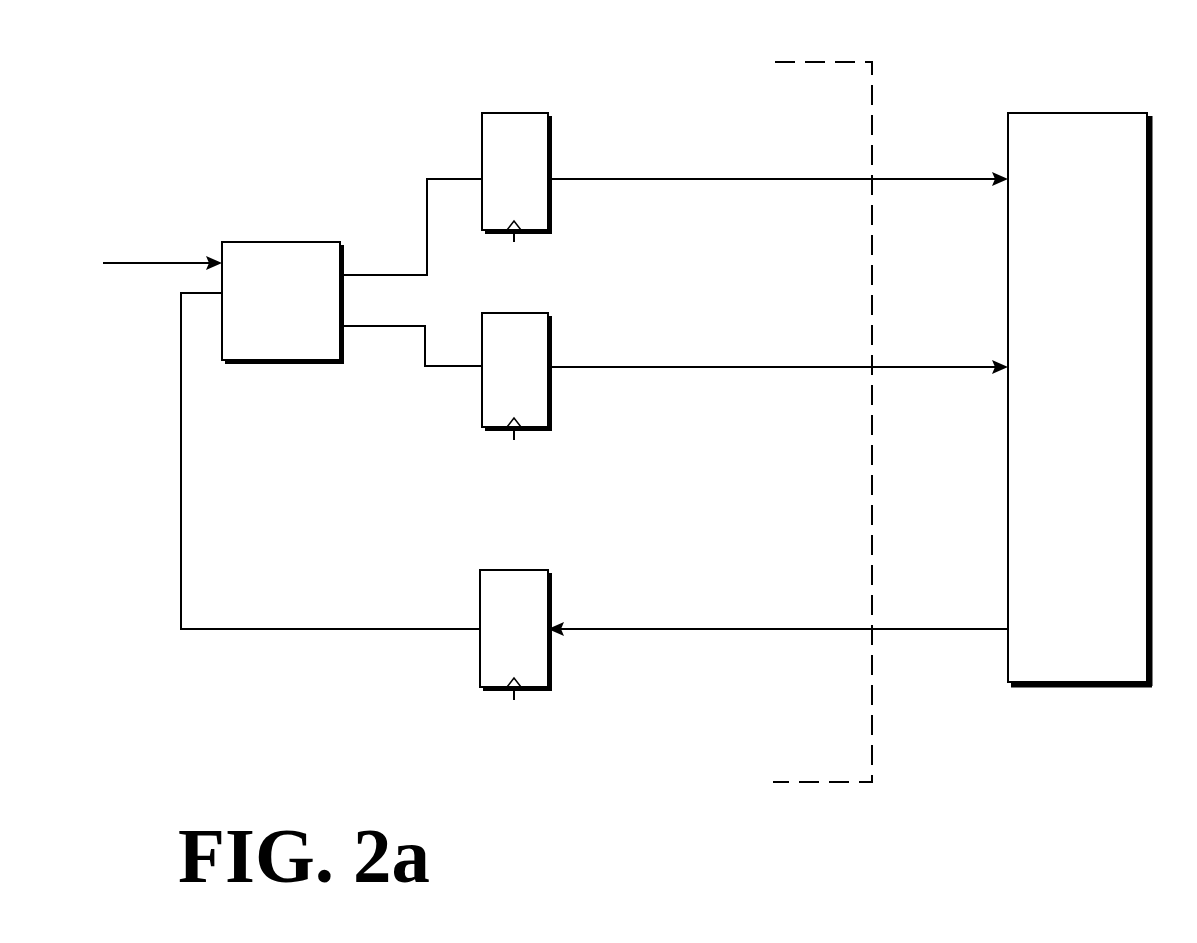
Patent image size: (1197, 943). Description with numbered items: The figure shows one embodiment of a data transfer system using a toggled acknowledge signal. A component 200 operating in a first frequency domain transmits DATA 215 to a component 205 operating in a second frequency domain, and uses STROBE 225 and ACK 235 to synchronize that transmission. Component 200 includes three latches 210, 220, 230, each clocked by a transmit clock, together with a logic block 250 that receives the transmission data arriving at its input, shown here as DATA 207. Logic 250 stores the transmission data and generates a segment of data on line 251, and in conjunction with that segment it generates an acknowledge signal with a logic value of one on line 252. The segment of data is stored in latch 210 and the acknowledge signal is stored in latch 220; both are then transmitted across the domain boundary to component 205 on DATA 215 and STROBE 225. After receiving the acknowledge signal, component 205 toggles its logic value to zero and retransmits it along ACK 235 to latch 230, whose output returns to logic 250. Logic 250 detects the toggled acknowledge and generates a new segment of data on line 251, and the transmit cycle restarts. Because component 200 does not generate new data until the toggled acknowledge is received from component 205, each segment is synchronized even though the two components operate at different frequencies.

The component 200 is at (250, 74).
The component 205 is at (1105, 113).
The data input 207 is at (148, 249).
The latch 210 is at (492, 113).
The DATA 215 is at (778, 168).
The latch 220 is at (540, 313).
The STROBE 225 is at (778, 355).
The latch 230 is at (540, 570).
The ACK 235 is at (778, 618).
The logic block 250 is at (240, 242).
The line 251 is at (411, 227).
The line 252 is at (411, 333).